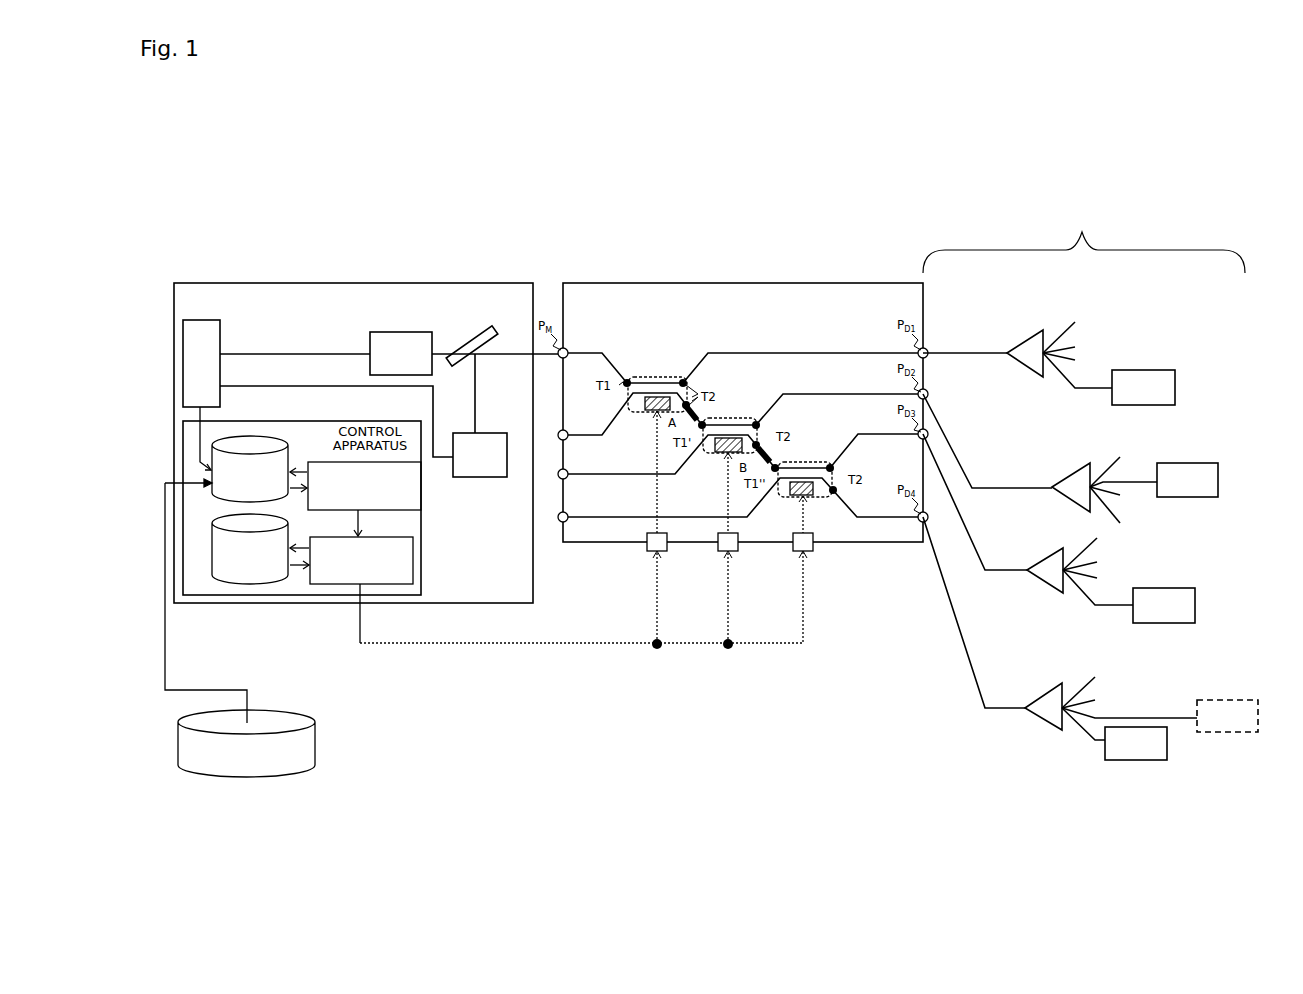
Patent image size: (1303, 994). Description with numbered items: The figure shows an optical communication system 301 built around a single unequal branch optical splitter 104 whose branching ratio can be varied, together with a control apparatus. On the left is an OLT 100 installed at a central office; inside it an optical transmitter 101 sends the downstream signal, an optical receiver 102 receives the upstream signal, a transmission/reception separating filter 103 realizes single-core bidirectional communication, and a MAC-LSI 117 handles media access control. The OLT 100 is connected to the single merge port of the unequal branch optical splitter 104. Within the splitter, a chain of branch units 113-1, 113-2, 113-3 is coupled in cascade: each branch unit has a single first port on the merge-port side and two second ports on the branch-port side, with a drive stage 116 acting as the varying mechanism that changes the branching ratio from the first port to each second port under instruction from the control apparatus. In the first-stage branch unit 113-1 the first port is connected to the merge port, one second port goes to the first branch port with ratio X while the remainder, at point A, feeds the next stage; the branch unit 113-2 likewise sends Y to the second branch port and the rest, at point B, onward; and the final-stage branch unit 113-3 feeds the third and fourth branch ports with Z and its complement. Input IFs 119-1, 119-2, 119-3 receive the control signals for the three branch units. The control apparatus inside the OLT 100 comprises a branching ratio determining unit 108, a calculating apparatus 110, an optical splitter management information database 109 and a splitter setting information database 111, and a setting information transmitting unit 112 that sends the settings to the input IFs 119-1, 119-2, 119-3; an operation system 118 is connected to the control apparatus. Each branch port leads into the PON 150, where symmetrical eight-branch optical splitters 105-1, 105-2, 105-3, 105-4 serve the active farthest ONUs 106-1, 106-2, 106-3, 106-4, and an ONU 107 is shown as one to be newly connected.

The OLT 100 is at (477, 282).
The optical transmitter 101 is at (390, 332).
The optical receiver 102 is at (478, 433).
The transmission/reception separating filter 103 is at (495, 329).
The unequal branch optical splitter 104 is at (648, 282).
The optical splitter 105-1 is at (1027, 337).
The optical splitter 105-2 is at (1070, 470).
The optical splitter 105-3 is at (1057, 595).
The optical splitter 105-4 is at (1052, 732).
The active farthest ONU 106-1 is at (1147, 368).
The active farthest ONU 106-2 is at (1167, 500).
The active farthest ONU 106-3 is at (1150, 623).
The active farthest ONU 106-4 is at (1143, 760).
The ONU to be newly connected 107 is at (1202, 732).
The branching ratio determining unit 108 is at (425, 488).
The optical splitter management information database 109 is at (250, 436).
The calculating apparatus 110 is at (413, 510).
The splitter setting information database 111 is at (240, 592).
The setting information transmitting unit 112 is at (347, 592).
The branch unit 113-1 is at (668, 377).
The branch unit 113-2 is at (745, 418).
The branch unit 113-3 is at (813, 462).
The drive stage 116 is at (647, 413).
The MAC-LSI 117 is at (218, 316).
The operation system 118 is at (298, 778).
The input IF 119-1 is at (647, 548).
The input IF 119-2 is at (717, 552).
The input IF 119-3 is at (793, 552).
The PON 150 is at (1084, 236).
The optical communication system 301 is at (834, 219).